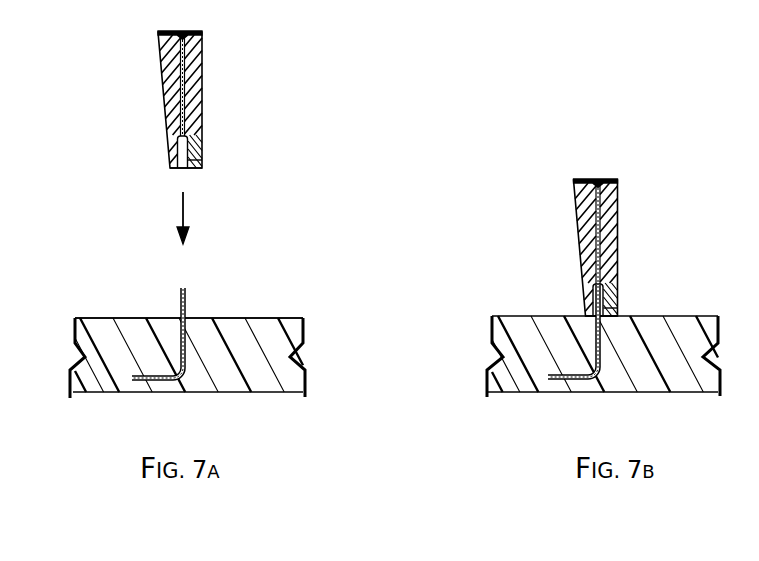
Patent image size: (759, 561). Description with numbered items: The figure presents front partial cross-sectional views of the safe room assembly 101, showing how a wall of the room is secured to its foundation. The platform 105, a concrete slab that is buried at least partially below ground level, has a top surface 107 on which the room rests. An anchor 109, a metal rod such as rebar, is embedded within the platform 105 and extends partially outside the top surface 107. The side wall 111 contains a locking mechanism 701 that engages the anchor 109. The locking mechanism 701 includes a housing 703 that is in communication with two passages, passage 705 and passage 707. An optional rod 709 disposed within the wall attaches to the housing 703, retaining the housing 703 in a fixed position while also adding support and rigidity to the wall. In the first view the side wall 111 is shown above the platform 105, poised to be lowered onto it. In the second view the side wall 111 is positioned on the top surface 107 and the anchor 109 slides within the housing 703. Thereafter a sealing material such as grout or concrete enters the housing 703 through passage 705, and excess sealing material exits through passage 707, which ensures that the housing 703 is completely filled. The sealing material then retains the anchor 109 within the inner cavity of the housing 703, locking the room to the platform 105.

In FIG. 7A, the safe room assembly 101 is at (359, 85).
In FIG. 7A, the platform 105 is at (234, 393).
In FIG. 7A, the top surface 107 is at (254, 307).
In FIG. 7A, the anchor 109 is at (180, 305).
In FIG. 7B, the anchor 109 is at (618, 306).
In FIG. 7A, the side wall 111 is at (192, 109).
In FIG. 7A, the locking mechanism 701 is at (147, 188).
In FIG. 7A, the housing 703 is at (176, 156).
In FIG. 7B, the housing 703 is at (588, 298).
In FIG. 7A, the passage 705 is at (197, 168).
In FIG. 7A, the passage 707 is at (198, 134).
In FIG. 7A, the rod 709 is at (160, 59).